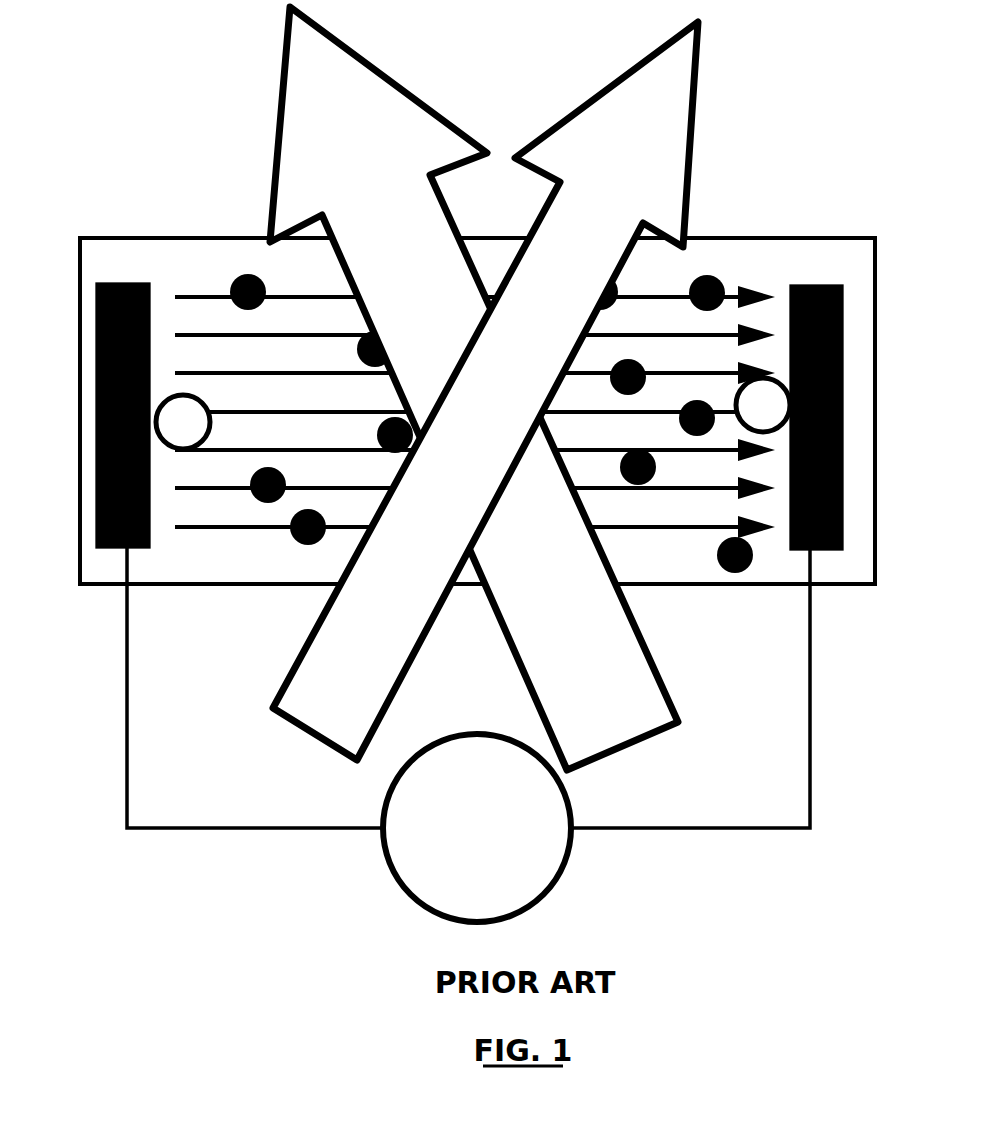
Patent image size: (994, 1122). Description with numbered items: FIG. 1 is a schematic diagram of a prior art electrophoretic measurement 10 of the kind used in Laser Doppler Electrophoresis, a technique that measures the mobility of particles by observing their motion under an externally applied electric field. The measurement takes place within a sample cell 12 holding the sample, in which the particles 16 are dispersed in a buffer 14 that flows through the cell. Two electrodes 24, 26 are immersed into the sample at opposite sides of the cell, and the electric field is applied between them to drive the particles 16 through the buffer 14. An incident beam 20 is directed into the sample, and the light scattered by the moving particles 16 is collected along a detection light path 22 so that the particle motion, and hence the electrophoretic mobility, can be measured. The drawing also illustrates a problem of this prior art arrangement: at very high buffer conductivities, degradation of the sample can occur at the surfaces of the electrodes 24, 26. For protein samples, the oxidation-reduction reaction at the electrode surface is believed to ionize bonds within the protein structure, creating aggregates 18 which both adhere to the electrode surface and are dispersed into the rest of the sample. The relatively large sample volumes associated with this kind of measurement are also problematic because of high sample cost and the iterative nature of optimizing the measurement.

The prior art flow cytometer system 10 is at (93, 859).
The flow cell enclosure 12 is at (800, 238).
The buffer 14 is at (750, 280).
The particles 16 is at (240, 282).
The aggregates 18 is at (207, 405).
The incident beam 20 is at (300, 656).
The detection light path 22 is at (648, 650).
The electrode 24 is at (95, 318).
The electrode 26 is at (844, 325).